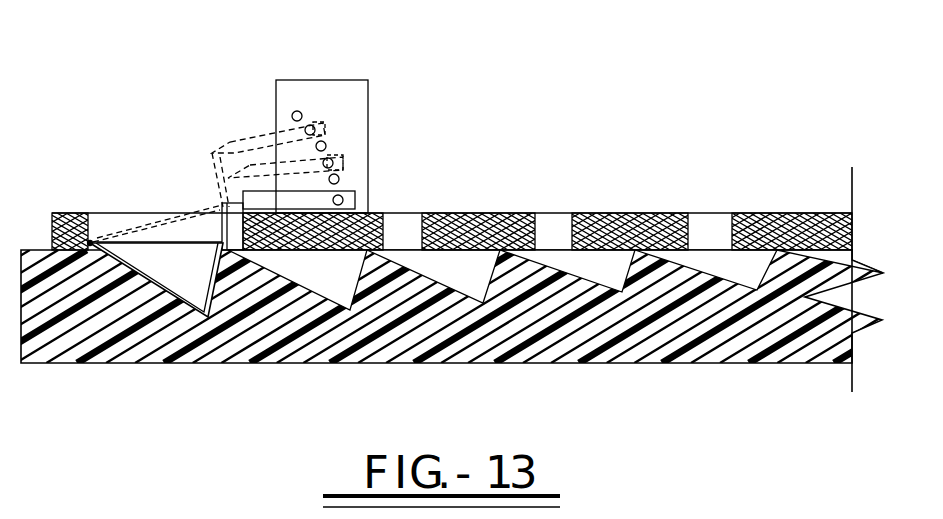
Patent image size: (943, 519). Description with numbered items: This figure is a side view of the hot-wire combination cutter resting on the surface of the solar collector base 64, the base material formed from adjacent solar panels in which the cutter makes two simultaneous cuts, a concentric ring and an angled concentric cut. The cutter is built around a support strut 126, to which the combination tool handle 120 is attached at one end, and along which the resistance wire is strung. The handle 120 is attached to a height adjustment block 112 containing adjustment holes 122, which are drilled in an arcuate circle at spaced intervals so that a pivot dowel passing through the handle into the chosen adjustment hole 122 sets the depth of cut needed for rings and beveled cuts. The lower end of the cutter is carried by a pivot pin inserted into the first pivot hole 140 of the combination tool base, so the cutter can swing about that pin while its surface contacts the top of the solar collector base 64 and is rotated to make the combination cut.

The solar collector base 64 is at (117, 318).
The height adjustment block 112 is at (358, 163).
The combination tool handle 120 is at (325, 128).
The adjustment holes 122 is at (299, 111).
The support strut 126 is at (212, 173).
The first pivot hole 140 is at (89, 241).